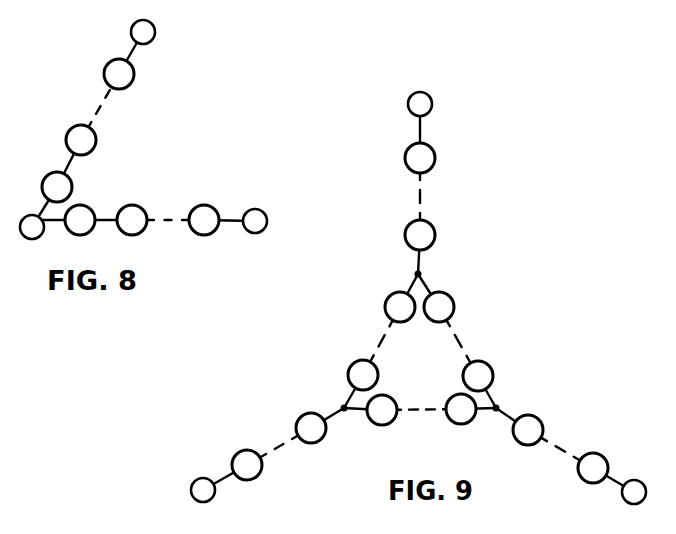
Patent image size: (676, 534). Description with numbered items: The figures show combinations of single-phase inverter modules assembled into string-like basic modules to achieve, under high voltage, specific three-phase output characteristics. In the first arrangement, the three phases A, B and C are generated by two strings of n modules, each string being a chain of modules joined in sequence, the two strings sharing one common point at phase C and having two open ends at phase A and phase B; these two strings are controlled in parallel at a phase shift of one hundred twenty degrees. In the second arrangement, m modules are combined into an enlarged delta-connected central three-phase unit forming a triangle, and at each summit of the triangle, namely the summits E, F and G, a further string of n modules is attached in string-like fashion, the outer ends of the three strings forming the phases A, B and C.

In FIG. 8, the phase A is at (137, 47).
In FIG. 9, the phase A is at (420, 125).
In FIG. 8, the phase B is at (235, 221).
In FIG. 9, the phase B is at (619, 486).
In FIG. 8, the phase C is at (50, 213).
In FIG. 9, the phase C is at (219, 483).
In FIG. 9, the summit of the triangle E is at (418, 274).
In FIG. 9, the summit of the triangle F is at (496, 408).
In FIG. 9, the summit of the triangle G is at (344, 408).
In FIG. 8, the n modules n is at (57, 96).
In FIG. 9, the n modules n is at (442, 198).
In FIG. 9, the m modules m is at (472, 331).